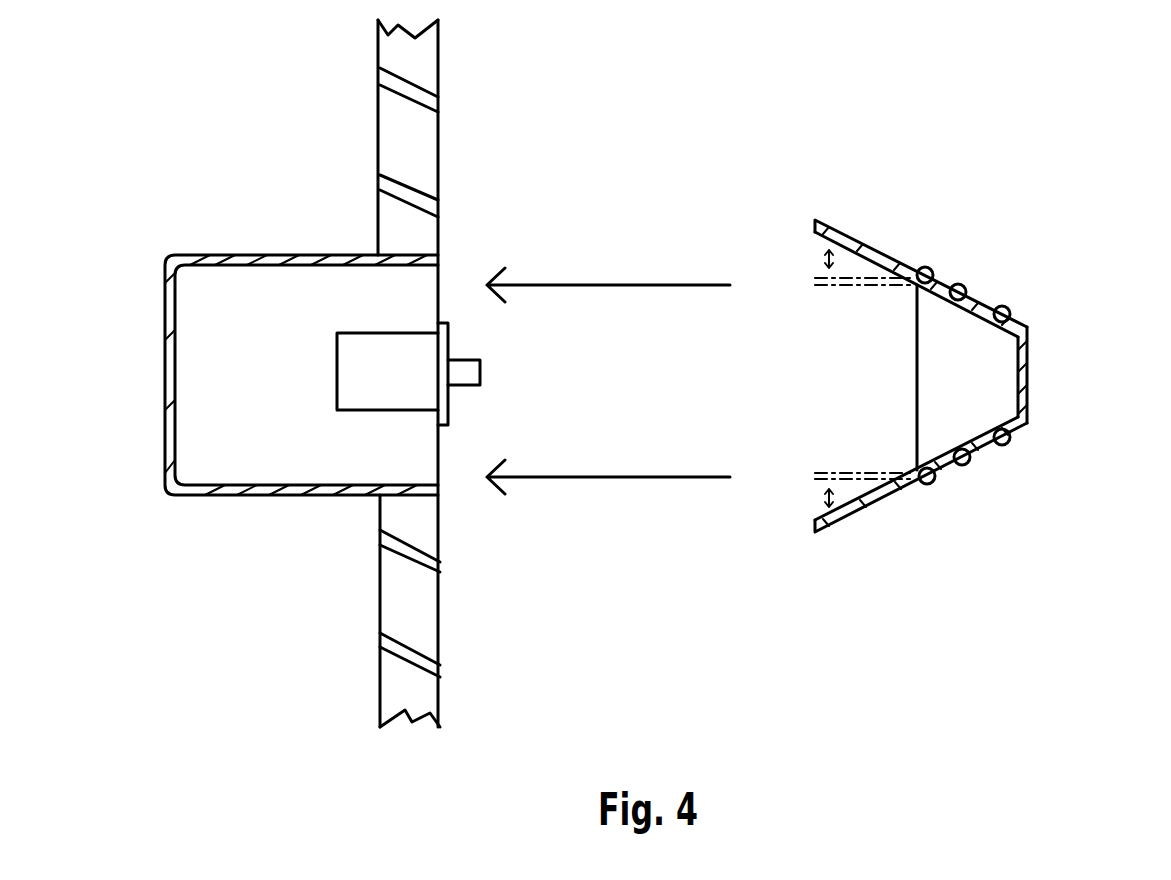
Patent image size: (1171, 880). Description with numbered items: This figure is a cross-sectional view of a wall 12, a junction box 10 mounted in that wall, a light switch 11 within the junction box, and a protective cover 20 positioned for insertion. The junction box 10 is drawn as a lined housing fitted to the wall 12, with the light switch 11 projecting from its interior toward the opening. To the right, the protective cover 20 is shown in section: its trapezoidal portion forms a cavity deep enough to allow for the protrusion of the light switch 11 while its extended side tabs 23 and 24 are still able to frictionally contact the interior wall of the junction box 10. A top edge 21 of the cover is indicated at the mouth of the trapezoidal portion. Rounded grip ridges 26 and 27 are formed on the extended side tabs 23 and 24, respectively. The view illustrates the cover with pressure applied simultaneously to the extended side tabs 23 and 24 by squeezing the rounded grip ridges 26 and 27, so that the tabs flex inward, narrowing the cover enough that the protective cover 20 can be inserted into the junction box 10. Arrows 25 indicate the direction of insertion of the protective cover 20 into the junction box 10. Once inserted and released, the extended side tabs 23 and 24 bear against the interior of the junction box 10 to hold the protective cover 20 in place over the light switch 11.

The junction box 10 is at (163, 366).
The light switch 11 is at (367, 410).
The wall 12 is at (377, 607).
The protective cover 20 is at (1032, 385).
The top edge 21 is at (912, 362).
The extended side tab 23 is at (852, 518).
The extended side tab 24 is at (858, 243).
The arrows 25 is at (608, 382).
The rounded grip ridge 26 is at (963, 466).
The rounded grip ridge 27 is at (967, 287).